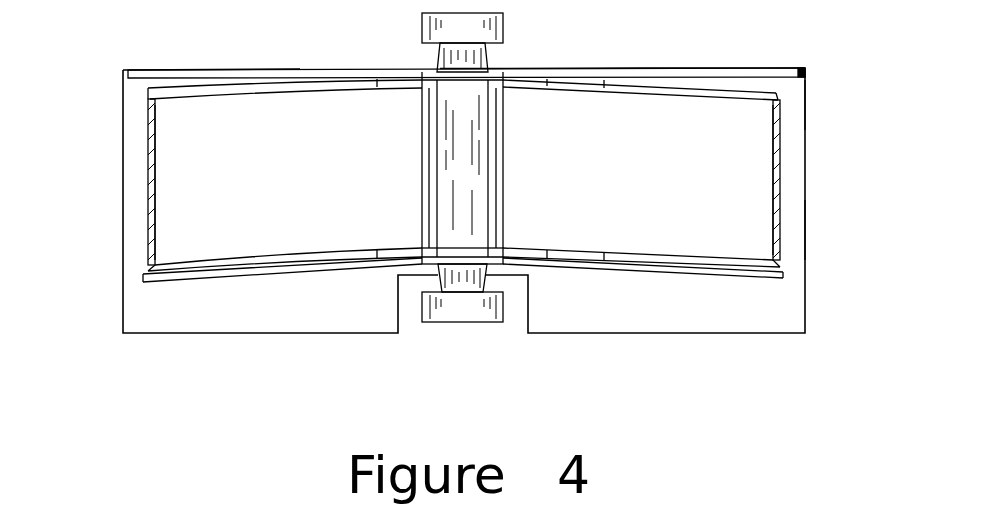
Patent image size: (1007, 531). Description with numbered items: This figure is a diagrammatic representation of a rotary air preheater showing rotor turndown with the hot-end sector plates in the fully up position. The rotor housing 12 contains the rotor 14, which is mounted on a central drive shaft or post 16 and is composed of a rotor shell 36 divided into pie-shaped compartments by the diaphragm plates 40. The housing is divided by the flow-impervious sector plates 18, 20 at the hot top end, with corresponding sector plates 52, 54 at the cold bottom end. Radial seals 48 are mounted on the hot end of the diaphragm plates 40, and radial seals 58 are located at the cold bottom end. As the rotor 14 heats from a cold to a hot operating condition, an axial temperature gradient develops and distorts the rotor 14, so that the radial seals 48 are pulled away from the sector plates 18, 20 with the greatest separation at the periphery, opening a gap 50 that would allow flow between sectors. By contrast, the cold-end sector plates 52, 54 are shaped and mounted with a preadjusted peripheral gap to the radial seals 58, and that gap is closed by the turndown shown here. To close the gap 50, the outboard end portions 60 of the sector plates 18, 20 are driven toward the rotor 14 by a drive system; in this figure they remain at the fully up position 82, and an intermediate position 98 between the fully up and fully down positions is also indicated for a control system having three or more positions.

The housing 12 is at (123, 283).
The rotor 14 is at (752, 227).
The drive shaft or post 16 is at (422, 23).
The sector plate 18 is at (338, 71).
The sector plate 20 is at (522, 70).
The rotor shell 36 is at (752, 193).
The diaphragm plates 40 is at (177, 202).
The radial seals 48 is at (256, 84).
The gap 50 is at (163, 87).
The sector plate 52 is at (203, 277).
The sector plate 54 is at (730, 272).
The radial seals 58 is at (278, 260).
The outboard end portions 60 is at (128, 70).
The fully up position 82 is at (805, 67).
The intermediate position 98 is at (765, 83).